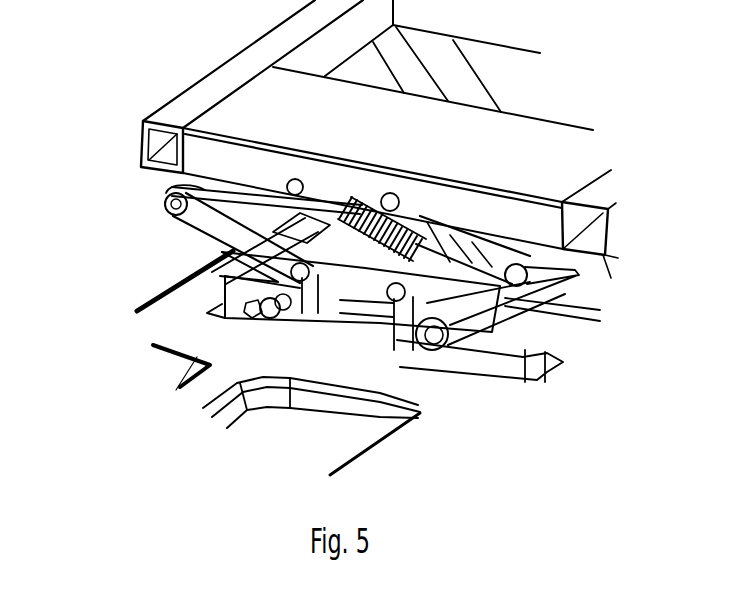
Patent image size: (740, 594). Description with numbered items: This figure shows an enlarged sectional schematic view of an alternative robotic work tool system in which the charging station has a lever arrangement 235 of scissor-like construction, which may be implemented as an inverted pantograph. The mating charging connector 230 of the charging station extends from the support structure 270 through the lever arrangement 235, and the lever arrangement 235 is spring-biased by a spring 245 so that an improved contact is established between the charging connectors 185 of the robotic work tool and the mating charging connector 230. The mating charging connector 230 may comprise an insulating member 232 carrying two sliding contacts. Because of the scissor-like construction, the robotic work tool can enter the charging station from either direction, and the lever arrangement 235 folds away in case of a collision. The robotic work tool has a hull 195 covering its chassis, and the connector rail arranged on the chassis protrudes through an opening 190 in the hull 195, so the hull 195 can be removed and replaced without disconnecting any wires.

The support structure 270 is at (197, 103).
The lever arrangement 235 is at (160, 233).
The spring 245 is at (215, 227).
The opening in the hull 190 is at (212, 281).
The hull 195 is at (222, 368).
The mating charging connector 230 is at (353, 300).
The insulating member 232 is at (358, 333).
The charging connectors 185 is at (522, 343).